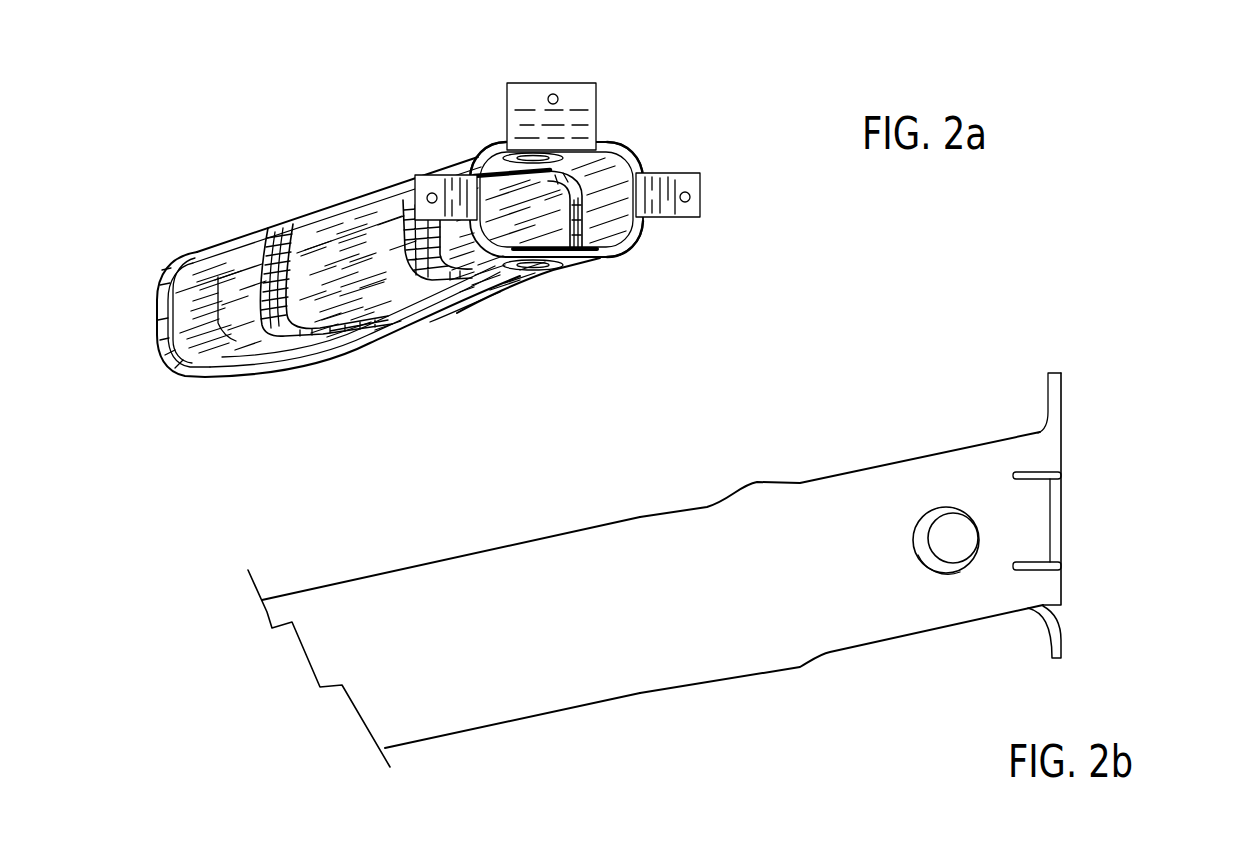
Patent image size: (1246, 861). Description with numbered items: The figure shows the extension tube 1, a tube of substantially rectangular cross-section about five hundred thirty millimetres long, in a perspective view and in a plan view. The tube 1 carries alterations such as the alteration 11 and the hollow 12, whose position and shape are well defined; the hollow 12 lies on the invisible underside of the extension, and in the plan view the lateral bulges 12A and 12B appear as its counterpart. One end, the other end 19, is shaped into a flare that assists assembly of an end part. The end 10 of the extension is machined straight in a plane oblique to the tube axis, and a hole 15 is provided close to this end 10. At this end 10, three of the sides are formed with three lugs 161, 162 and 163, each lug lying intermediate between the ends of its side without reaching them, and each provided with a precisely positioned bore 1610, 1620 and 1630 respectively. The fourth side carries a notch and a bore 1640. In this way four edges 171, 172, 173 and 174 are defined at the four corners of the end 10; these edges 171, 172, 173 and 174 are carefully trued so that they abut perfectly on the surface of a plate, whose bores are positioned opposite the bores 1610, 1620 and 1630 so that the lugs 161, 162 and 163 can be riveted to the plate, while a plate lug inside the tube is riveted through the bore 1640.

In FIG. 2A, the extension tube 1 is at (293, 206).
In FIG. 2B, the extension tube 1 is at (512, 533).
In FIG. 2A, the other end 19 is at (150, 303).
In FIG. 2A, the alteration 11 is at (368, 340).
In FIG. 2A, the hollow 12 is at (511, 287).
In FIG. 2A, the end of the extension 10 is at (553, 194).
In FIG. 2B, the end of the extension 10 is at (1092, 519).
In FIG. 2A, the edge 171 is at (488, 148).
In FIG. 2A, the edge 172 is at (632, 148).
In FIG. 2A, the edge 173 is at (636, 248).
In FIG. 2A, the edge 174 is at (488, 252).
In FIG. 2A, the lug 161 is at (408, 157).
In FIG. 2B, the lug 161 is at (1062, 640).
In FIG. 2A, the bore 1610 is at (441, 182).
In FIG. 2A, the lug 162 is at (552, 86).
In FIG. 2B, the lug 162 is at (1036, 527).
In FIG. 2A, the bore 1620 is at (556, 95).
In FIG. 2A, the lug 163 is at (701, 205).
In FIG. 2B, the lug 163 is at (1062, 388).
In FIG. 2A, the bore 1630 is at (690, 202).
In FIG. 2A, the bore 1640 is at (546, 267).
In FIG. 2B, the lateral bulge 12A is at (760, 478).
In FIG. 2B, the lateral bulge 12B is at (808, 675).
In FIG. 2B, the hole 15 is at (944, 530).